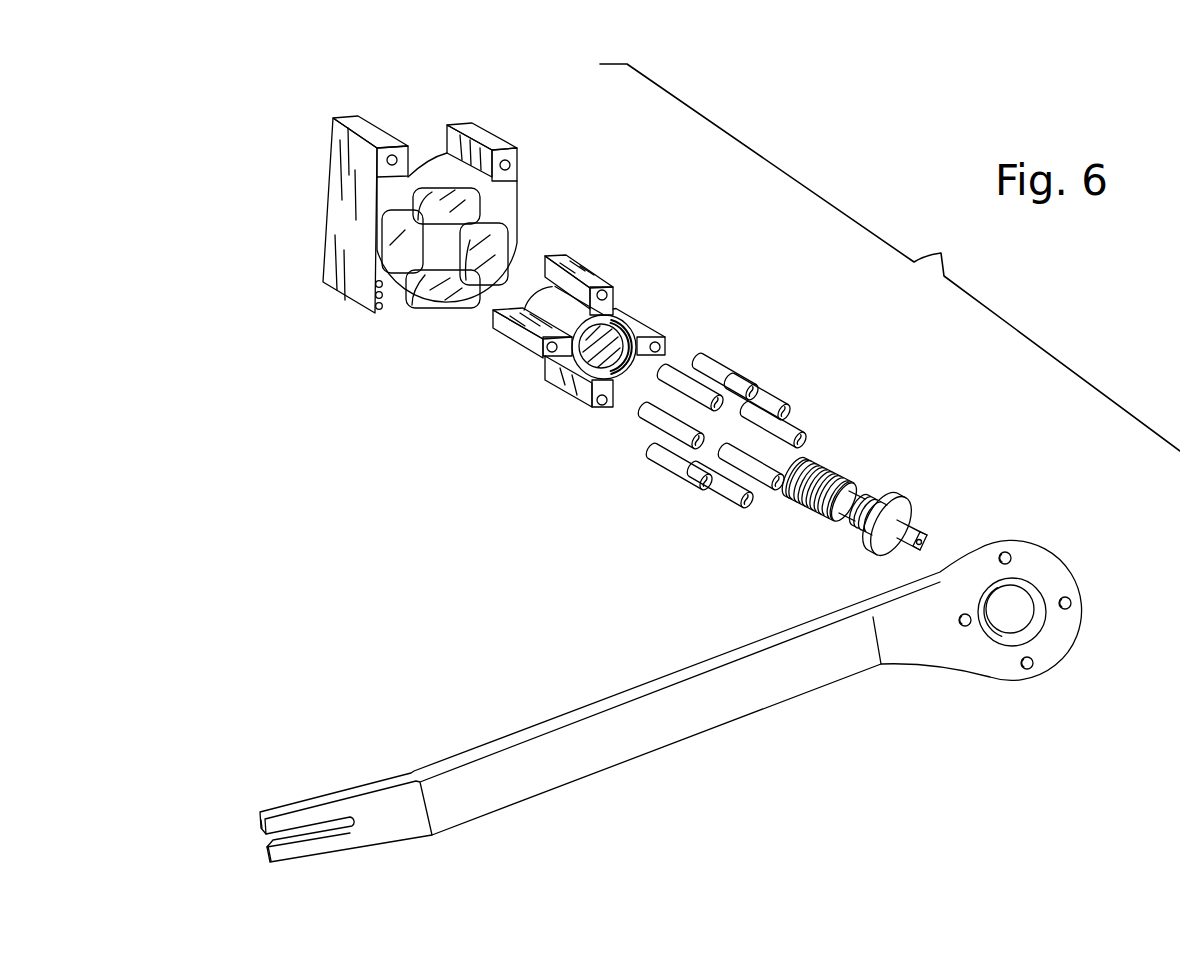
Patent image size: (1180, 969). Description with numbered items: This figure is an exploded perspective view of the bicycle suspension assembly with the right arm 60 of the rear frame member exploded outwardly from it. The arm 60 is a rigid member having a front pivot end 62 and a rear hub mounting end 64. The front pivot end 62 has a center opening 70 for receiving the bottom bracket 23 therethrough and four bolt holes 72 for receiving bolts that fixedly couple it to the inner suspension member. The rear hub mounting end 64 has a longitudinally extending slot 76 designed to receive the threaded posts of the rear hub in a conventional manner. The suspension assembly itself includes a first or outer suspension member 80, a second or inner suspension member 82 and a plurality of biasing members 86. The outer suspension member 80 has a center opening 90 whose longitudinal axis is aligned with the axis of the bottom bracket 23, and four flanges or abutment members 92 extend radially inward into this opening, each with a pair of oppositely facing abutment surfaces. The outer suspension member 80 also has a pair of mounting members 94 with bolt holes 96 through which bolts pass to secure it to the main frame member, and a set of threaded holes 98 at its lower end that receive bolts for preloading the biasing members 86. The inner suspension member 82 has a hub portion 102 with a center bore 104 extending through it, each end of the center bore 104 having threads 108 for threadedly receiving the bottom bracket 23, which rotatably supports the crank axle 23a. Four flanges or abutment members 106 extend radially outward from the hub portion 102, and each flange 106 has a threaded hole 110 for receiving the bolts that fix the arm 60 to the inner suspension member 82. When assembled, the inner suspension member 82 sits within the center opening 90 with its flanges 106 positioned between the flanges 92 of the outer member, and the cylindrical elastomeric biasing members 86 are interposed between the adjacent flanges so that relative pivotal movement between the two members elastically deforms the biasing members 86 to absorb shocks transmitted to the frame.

The bottom bracket 23 is at (895, 487).
The bicycle crank axle 23a is at (812, 462).
The arm 60 is at (724, 736).
The front pivot end 62 is at (981, 660).
The rear hub mounting end 64 is at (334, 842).
The center opening 70 is at (1017, 596).
The bolt holes 72 is at (1010, 553).
The longitudinally extending slot 76 is at (314, 820).
The first or outer suspension member 80 is at (573, 181).
The second or inner suspension member 82 is at (655, 286).
The biasing members 86 is at (800, 427).
The center opening 90 is at (398, 233).
The flanges or abutment members 92 is at (382, 226).
The mounting members 94 is at (366, 131).
The bolt holes 96 is at (387, 159).
The threaded holes 98 is at (376, 300).
The hub portion 102 is at (616, 318).
The center bore 104 is at (546, 365).
The flanges or abutment members 106 is at (603, 287).
The threads 108 is at (590, 375).
The threaded hole 110 is at (598, 283).